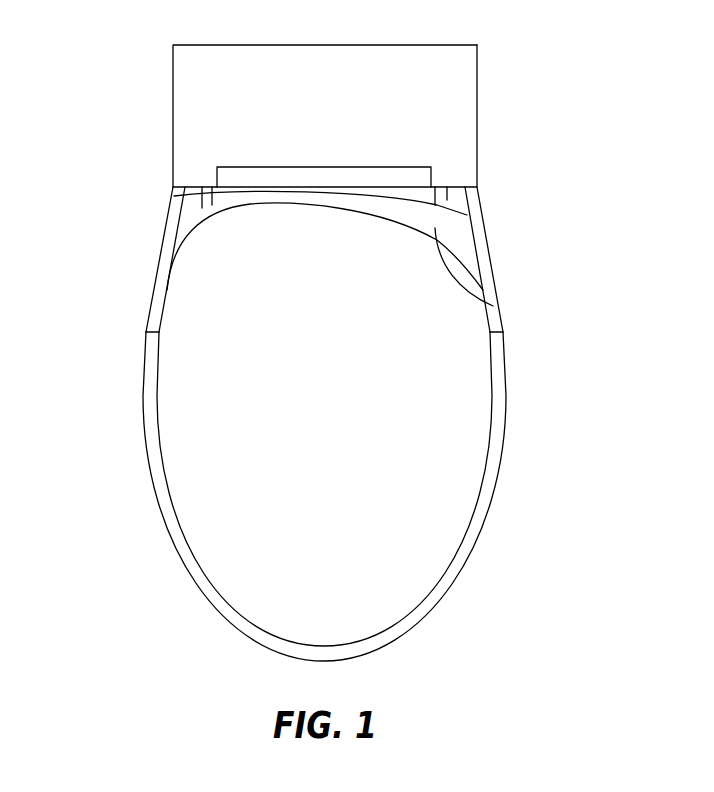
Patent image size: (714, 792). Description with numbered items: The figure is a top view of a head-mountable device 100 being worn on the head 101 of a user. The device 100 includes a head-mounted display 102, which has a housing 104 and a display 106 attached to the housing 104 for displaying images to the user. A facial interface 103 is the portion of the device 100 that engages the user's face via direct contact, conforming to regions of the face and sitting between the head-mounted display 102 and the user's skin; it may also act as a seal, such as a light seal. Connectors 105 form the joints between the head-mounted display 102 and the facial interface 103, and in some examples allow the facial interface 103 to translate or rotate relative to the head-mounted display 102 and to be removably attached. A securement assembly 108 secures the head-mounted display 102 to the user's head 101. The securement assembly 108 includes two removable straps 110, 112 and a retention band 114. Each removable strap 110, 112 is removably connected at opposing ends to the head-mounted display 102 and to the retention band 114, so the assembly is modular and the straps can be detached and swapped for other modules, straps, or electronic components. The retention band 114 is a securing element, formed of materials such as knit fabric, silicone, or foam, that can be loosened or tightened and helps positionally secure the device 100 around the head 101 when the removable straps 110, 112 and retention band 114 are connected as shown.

The head-mountable device 100 is at (528, 78).
The head of a user 101 is at (445, 505).
The head-mounted display 102 is at (386, 91).
The facial interface 103 is at (493, 306).
The housing 104 is at (183, 86).
The connector 105 is at (207, 196).
The display 106 is at (287, 177).
The securement assembly 108 is at (139, 275).
The removable strap 110 is at (167, 231).
The removable strap 112 is at (483, 237).
The retention band 114 is at (410, 627).